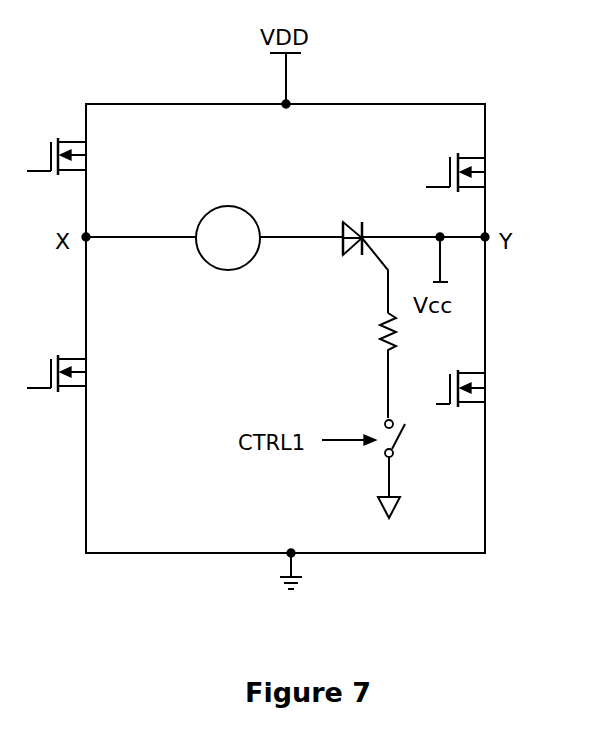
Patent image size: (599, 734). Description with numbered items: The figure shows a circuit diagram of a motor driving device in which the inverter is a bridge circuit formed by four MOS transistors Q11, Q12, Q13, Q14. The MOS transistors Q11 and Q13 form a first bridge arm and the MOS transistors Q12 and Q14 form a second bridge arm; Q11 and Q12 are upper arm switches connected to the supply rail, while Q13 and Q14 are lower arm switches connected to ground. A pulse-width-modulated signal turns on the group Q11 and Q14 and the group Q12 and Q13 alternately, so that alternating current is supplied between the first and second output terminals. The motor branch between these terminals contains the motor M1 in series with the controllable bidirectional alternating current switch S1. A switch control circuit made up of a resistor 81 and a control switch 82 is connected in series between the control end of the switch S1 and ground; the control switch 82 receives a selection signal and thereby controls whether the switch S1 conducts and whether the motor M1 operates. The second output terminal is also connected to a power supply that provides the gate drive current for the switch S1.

The MOS transistor Q11 is at (84, 156).
The MOS transistor Q12 is at (483, 172).
The MOS transistor Q13 is at (84, 373).
The MOS transistor Q14 is at (488, 388).
The motor M1 is at (228, 238).
The controllable bidirectional alternating current switch S1 is at (365, 223).
The resistor 81 is at (386, 330).
The control switch 82 is at (404, 438).